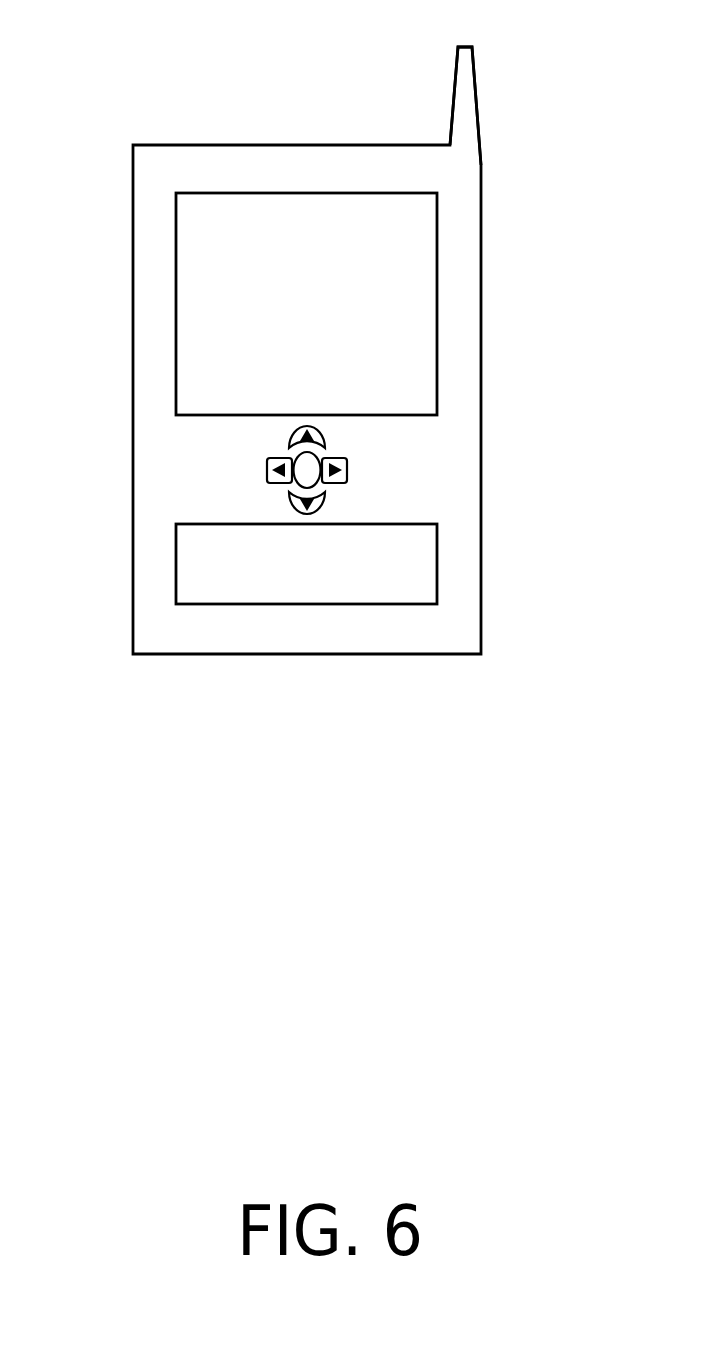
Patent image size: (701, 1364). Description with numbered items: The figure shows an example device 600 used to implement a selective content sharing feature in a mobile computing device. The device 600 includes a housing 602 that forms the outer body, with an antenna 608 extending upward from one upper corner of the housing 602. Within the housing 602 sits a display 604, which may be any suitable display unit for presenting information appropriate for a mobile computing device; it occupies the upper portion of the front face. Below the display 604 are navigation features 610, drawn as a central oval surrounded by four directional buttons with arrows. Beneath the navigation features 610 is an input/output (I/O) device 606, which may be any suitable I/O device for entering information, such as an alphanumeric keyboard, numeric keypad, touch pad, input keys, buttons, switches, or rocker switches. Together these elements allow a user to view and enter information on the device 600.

The device 600 is at (147, 69).
The housing 602 is at (483, 402).
The display 604 is at (441, 218).
The input/output (I/O) device 606 is at (441, 560).
The antenna 608 is at (452, 92).
The navigation features 610 is at (353, 470).